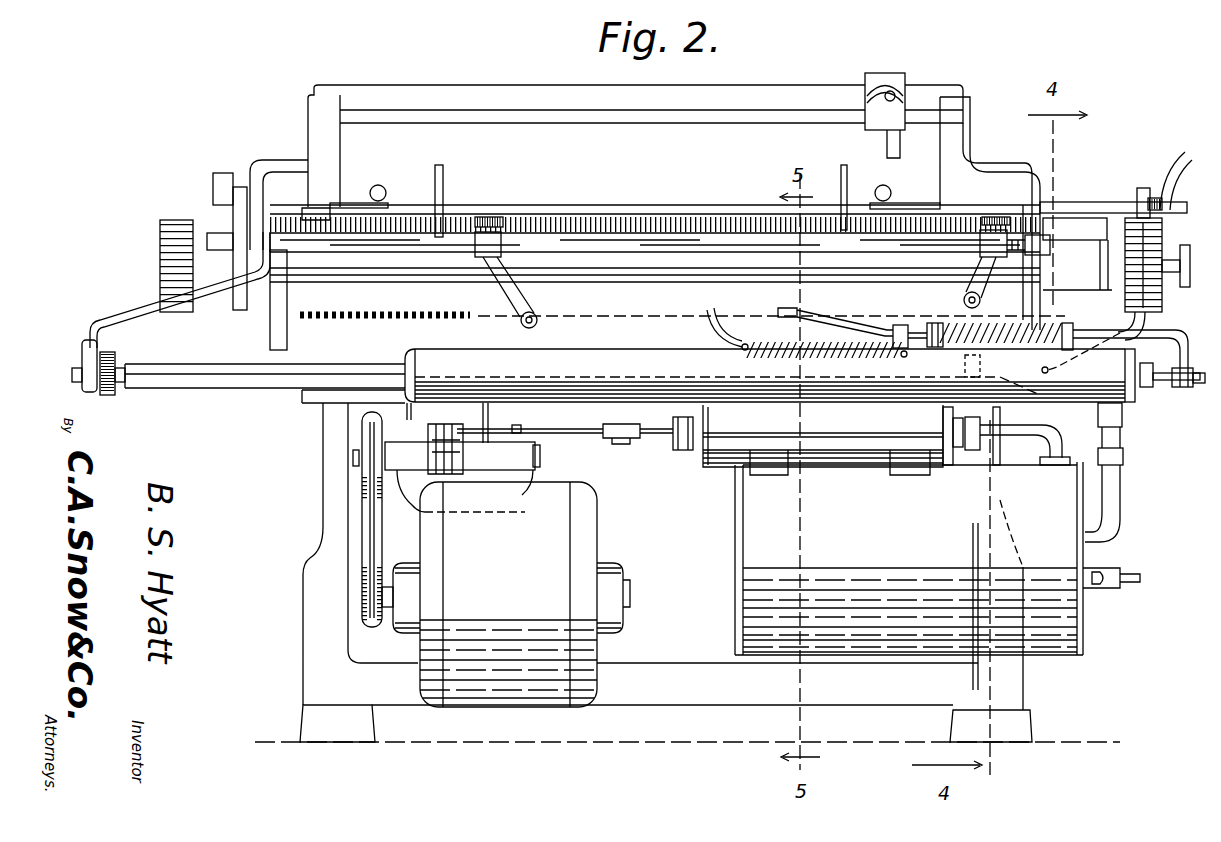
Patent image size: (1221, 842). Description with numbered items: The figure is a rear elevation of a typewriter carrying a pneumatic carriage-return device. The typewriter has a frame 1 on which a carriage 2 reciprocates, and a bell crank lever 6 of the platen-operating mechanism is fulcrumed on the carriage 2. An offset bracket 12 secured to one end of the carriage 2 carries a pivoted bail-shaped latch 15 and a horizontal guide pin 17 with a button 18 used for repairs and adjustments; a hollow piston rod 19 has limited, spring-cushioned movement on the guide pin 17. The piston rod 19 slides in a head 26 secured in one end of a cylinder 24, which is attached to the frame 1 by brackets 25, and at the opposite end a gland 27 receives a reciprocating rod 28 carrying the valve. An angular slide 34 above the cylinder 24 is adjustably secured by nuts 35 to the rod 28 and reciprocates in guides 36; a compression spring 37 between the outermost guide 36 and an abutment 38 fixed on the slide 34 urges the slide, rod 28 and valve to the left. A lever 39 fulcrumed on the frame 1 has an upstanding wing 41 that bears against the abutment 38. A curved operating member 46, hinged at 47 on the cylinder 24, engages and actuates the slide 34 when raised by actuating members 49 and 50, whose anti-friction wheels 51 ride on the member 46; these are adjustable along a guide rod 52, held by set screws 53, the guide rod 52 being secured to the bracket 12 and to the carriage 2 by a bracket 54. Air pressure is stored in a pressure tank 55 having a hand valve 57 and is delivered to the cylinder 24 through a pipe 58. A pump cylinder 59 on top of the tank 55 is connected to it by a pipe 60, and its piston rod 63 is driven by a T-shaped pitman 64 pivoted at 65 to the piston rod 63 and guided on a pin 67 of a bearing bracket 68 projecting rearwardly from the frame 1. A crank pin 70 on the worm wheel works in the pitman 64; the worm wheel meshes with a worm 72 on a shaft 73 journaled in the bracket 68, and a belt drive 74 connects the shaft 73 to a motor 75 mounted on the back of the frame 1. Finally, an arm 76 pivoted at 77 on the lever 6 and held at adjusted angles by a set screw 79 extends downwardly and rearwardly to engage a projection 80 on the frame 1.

The frame 1 is at (305, 540).
The carriage 2 is at (798, 84).
The bell crank lever 6 is at (1186, 162).
The offset bracket 12 is at (130, 307).
The latch 15 is at (82, 357).
The guide pin 17 is at (118, 395).
The button 18 is at (112, 356).
The piston rod 19 is at (218, 392).
The cylinder 24 is at (627, 357).
The brackets 25 is at (470, 410).
The head 26 is at (404, 354).
The gland 27 is at (1146, 365).
The rod 28 is at (1200, 388).
The angular slide 34 is at (827, 320).
The nuts 35 is at (1174, 388).
The guides 36 is at (897, 325).
The compression spring 37 is at (1040, 350).
The abutment 38 is at (948, 323).
The lever 39 is at (977, 393).
The upstanding wing 41 is at (935, 323).
The operating member 46 is at (721, 314).
The hinged mounting 47 is at (790, 336).
The actuating member 49 is at (532, 304).
The actuating member 50 is at (985, 278).
The anti-friction wheels 51 is at (540, 323).
The guide rod 52 is at (714, 243).
The set screws 53 is at (490, 217).
The bracket 54 is at (1040, 238).
The pressure tank 55 is at (1062, 657).
The hand valve 57 is at (1118, 569).
The pipe 58 is at (1118, 486).
The pump cylinder 59 is at (868, 449).
The pipe 60 is at (1028, 448).
The piston rod 63 is at (660, 445).
The T-shaped pitman 64 is at (574, 436).
The pivot 65 is at (618, 444).
The pin 67 is at (523, 430).
The bearing bracket 68 is at (510, 478).
The crank pin 70 is at (432, 424).
The worm 72 is at (457, 477).
The shaft 73 is at (353, 457).
The belt drive 74 is at (365, 515).
The motor 75 is at (537, 578).
The arm 76 is at (1122, 322).
The pivot 77 is at (1140, 200).
The set screw 79 is at (1155, 198).
The projection 80 is at (985, 363).